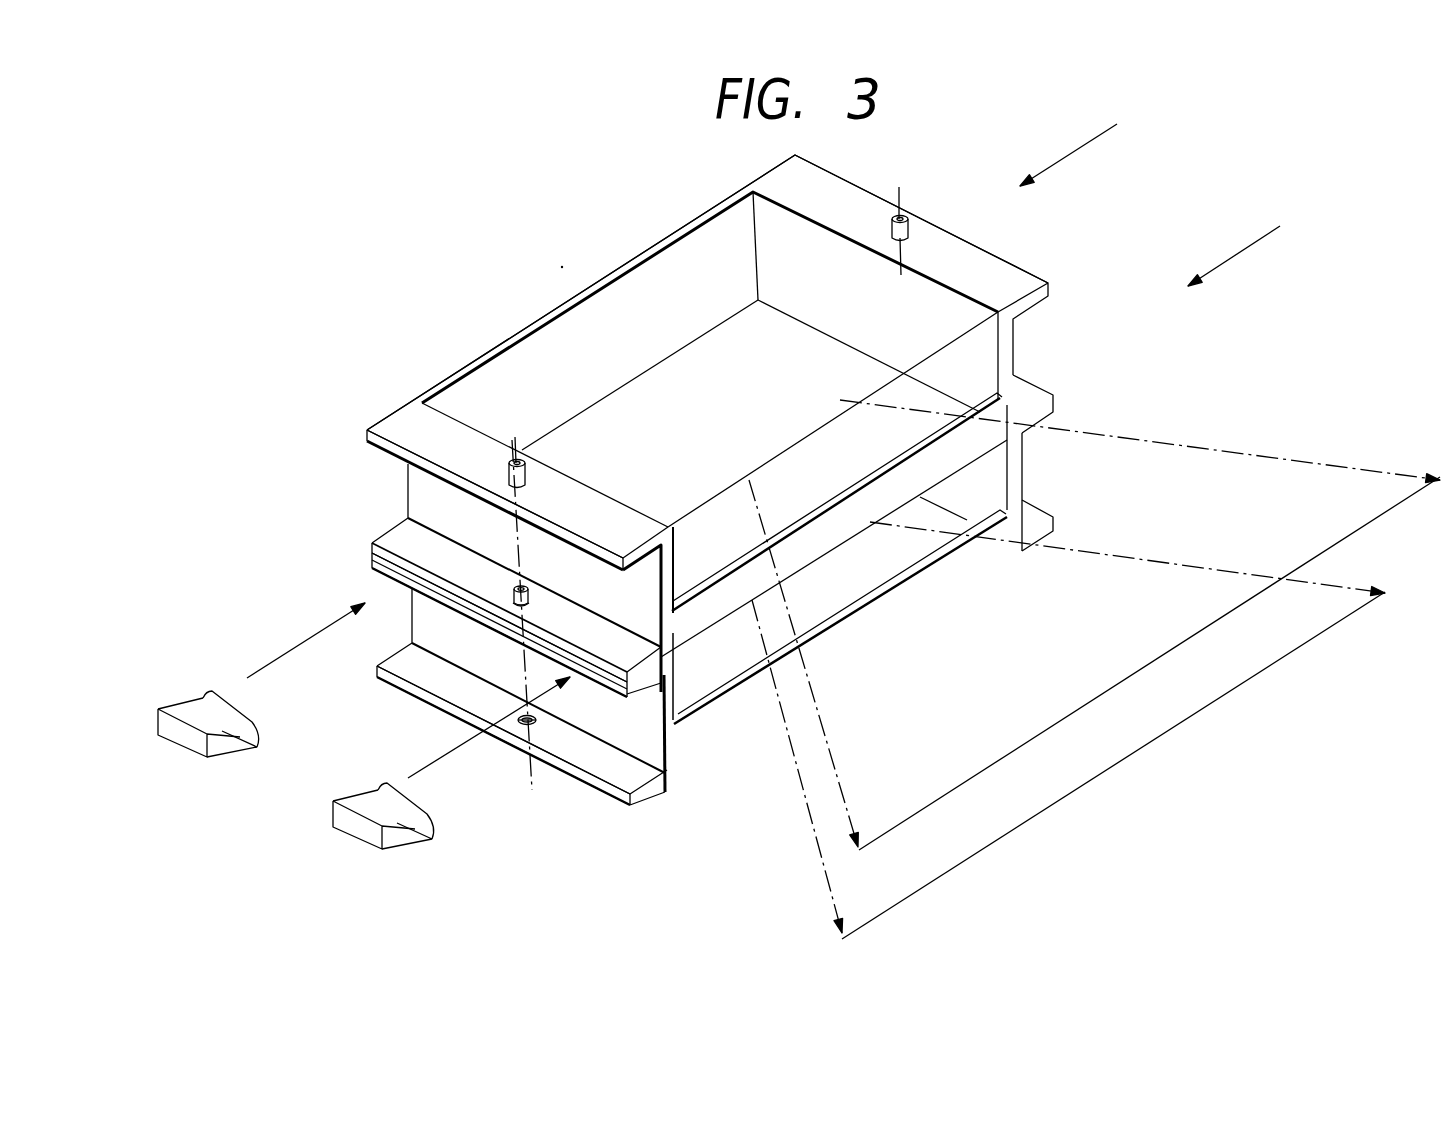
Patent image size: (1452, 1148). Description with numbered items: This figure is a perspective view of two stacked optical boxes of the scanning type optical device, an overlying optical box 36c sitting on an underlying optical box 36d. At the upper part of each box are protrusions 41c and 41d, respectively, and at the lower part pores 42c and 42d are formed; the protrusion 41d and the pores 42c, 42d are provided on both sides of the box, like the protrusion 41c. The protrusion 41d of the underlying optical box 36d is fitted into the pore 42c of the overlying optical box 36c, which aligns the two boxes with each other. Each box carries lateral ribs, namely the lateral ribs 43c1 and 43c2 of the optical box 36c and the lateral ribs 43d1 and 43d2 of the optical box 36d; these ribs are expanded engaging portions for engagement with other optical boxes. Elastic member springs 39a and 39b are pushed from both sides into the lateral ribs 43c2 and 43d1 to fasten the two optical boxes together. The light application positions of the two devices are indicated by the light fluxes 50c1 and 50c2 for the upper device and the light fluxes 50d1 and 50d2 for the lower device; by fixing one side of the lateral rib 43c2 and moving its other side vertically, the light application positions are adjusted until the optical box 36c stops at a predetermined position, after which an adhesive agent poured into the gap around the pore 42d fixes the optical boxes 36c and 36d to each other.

The optical box 36c is at (743, 426).
The optical box 36d is at (765, 640).
The lateral rib 43c1 is at (400, 413).
The lateral rib 43c2 is at (608, 637).
The lateral rib 43d1 is at (682, 733).
The lateral rib 43d2 is at (640, 793).
The protrusion 41c is at (900, 214).
The protrusion 41d is at (517, 582).
The pore 42c is at (518, 602).
The pore 42d is at (534, 726).
The elastic member spring 39a is at (362, 833).
The elastic member spring 39b is at (183, 740).
The light flux 50c1 is at (835, 760).
The light flux 50c2 is at (1306, 460).
The light flux 50d1 is at (832, 892).
The light flux 50d2 is at (1347, 587).